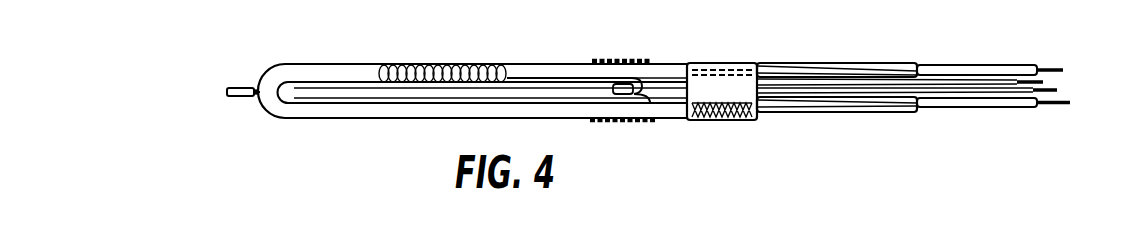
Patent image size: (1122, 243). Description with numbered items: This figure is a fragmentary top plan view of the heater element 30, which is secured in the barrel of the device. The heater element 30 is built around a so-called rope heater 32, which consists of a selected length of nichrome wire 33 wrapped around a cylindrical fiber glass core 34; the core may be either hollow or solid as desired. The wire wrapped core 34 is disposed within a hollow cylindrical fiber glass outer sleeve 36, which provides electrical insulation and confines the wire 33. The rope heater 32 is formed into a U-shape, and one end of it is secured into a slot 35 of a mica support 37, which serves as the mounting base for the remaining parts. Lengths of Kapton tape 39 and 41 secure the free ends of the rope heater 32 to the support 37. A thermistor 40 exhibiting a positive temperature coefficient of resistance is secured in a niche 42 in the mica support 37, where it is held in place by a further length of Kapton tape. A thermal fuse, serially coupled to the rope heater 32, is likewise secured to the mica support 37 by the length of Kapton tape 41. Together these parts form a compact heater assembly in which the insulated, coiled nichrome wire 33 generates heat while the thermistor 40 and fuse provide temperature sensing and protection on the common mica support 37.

The heater element 30 is at (327, 52).
The rope heater 32 is at (365, 64).
The nichrome wire 33 is at (428, 64).
The cylindrical fiber glass core 34 is at (477, 66).
The slot 35 is at (255, 97).
The hollow cylindrical fiber glass outer sleeve 36 is at (507, 63).
The mica support 37 is at (238, 88).
The Kapton tape 39 is at (654, 122).
The thermistor 40 is at (605, 121).
The Kapton tape 41 is at (743, 120).
The niche 42 is at (643, 78).